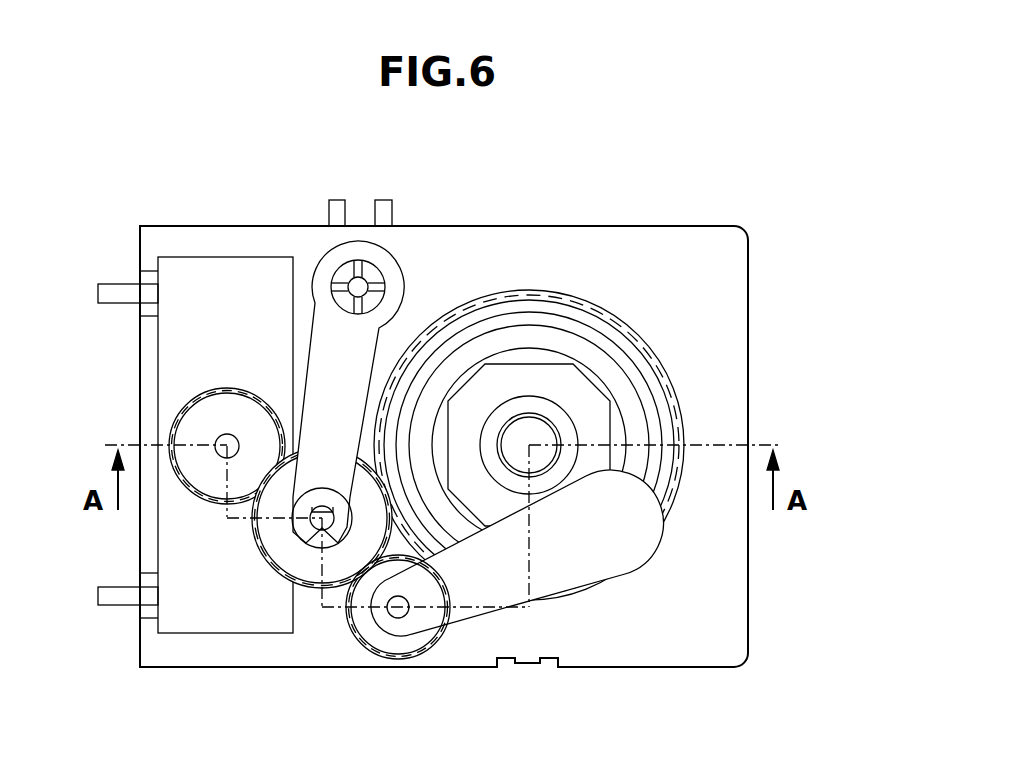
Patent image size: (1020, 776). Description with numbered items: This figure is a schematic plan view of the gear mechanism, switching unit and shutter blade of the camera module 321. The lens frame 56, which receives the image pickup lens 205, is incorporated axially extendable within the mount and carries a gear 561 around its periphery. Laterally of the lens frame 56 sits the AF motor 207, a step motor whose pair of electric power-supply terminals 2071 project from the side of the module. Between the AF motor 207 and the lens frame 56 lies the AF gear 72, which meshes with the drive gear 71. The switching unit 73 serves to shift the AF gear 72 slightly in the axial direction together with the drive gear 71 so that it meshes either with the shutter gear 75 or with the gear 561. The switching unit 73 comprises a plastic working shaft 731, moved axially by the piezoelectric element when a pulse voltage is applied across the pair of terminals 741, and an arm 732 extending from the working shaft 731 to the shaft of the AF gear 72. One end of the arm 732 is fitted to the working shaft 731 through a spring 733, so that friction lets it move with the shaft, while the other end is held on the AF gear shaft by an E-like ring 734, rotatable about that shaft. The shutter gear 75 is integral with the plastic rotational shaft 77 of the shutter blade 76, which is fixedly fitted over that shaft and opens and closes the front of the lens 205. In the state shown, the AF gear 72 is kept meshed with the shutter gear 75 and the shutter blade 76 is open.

The camera module 321 is at (742, 205).
The electric power-supply terminals 2071 is at (118, 292).
The AF motor 207 is at (211, 268).
The drive gear 71 is at (186, 410).
The AF gear 72 is at (313, 592).
The switching unit 73 is at (276, 418).
The working shaft 731 is at (352, 280).
The arm 732 is at (325, 370).
The spring 733 is at (381, 282).
The E-like ring 734 is at (302, 531).
The terminals 741 is at (383, 198).
The image pickup lens 205 is at (520, 427).
The lens frame 56 is at (592, 357).
The gear 561 is at (653, 355).
The shutter gear 75 is at (402, 660).
The shutter blade 76 is at (622, 548).
The rotational shaft 77 is at (408, 618).